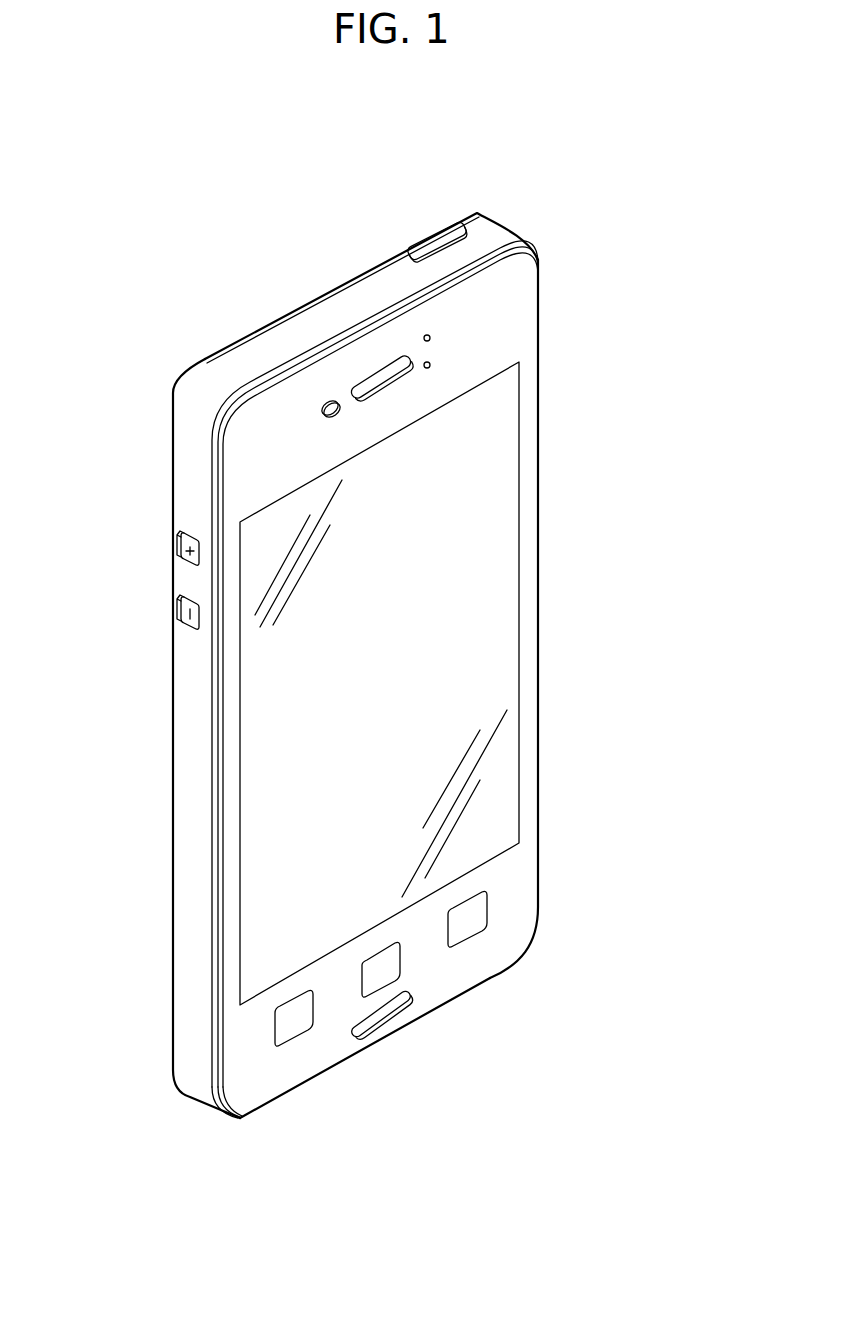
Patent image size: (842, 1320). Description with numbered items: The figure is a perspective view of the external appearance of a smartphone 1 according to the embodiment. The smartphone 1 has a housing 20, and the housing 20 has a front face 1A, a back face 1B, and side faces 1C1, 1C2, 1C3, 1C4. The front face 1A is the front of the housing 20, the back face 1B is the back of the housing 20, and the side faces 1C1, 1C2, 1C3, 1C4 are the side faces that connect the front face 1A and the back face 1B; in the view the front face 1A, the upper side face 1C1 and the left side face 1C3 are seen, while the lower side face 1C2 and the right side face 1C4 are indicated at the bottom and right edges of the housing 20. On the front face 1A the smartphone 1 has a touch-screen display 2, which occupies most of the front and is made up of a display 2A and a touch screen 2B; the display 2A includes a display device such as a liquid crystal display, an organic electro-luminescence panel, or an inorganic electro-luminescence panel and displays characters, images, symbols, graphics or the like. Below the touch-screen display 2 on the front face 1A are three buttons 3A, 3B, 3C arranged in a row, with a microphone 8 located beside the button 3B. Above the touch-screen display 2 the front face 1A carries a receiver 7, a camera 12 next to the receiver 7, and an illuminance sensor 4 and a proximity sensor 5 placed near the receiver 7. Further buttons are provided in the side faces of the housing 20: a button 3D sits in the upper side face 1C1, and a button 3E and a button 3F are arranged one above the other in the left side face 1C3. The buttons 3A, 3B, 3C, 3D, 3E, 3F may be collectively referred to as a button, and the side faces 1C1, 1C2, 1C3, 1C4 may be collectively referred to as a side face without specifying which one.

The smartphone 1 is at (389, 658).
The front face 1A is at (265, 413).
The back face 1B is at (170, 463).
The side face 1C1 is at (367, 287).
The side face 1C2 is at (443, 1013).
The side face 1C3 is at (190, 855).
The side face 1C4 is at (540, 477).
The touch-screen display 2 is at (465, 683).
The display 2A is at (298, 553).
The touch screen 2B is at (454, 803).
The button 3A is at (294, 1023).
The button 3B is at (381, 976).
The button 3C is at (469, 921).
The button 3D is at (438, 243).
The button 3E is at (182, 552).
The button 3F is at (182, 615).
The illuminance sensor 4 is at (428, 335).
The proximity sensor 5 is at (432, 363).
The receiver 7 is at (367, 380).
The microphone 8 is at (369, 1020).
The camera 12 is at (328, 400).
The housing 20 is at (146, 580).